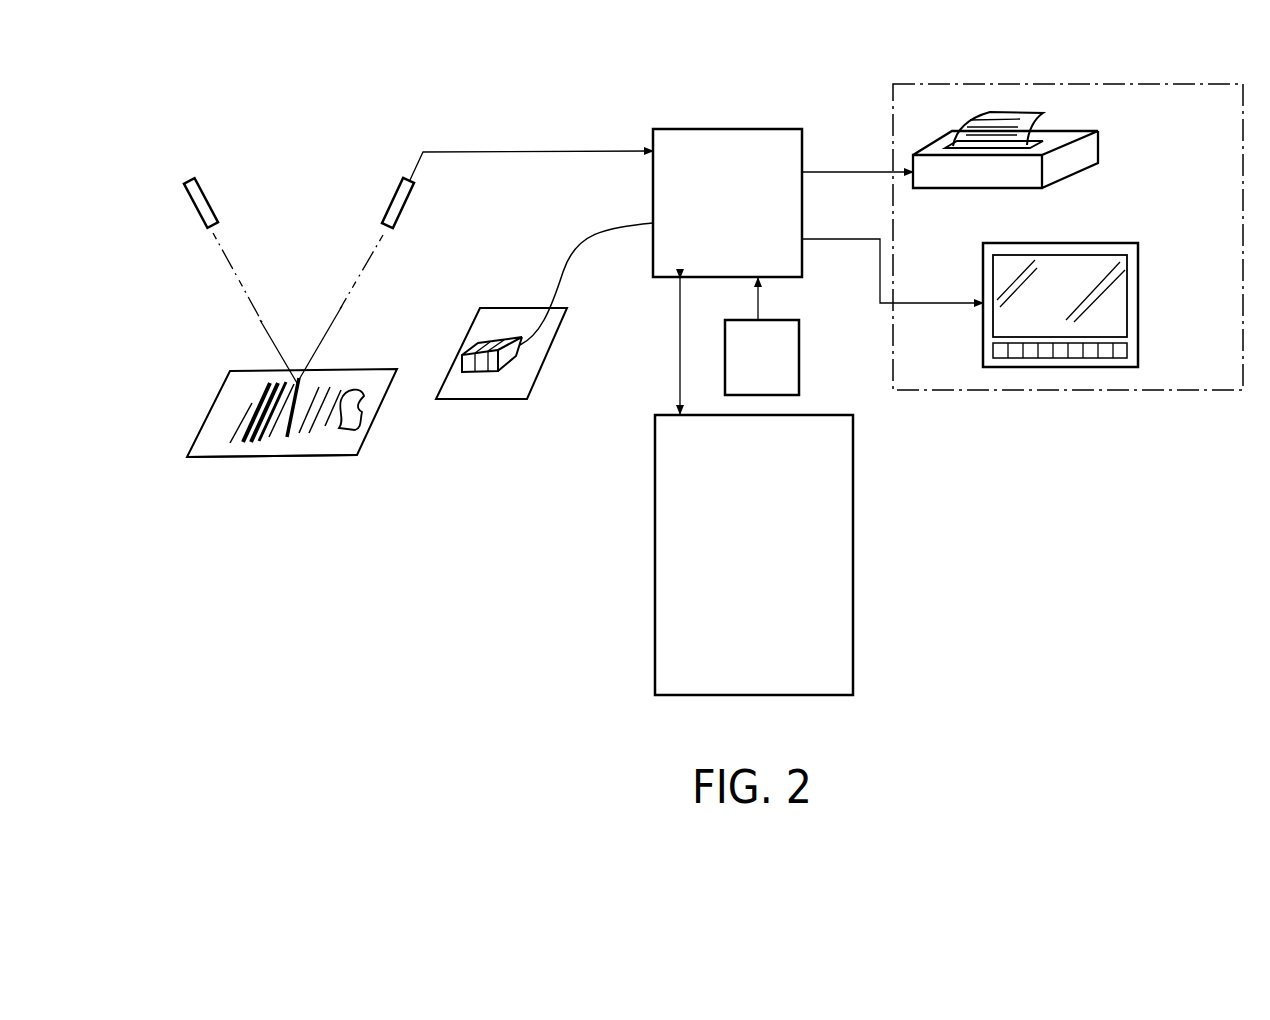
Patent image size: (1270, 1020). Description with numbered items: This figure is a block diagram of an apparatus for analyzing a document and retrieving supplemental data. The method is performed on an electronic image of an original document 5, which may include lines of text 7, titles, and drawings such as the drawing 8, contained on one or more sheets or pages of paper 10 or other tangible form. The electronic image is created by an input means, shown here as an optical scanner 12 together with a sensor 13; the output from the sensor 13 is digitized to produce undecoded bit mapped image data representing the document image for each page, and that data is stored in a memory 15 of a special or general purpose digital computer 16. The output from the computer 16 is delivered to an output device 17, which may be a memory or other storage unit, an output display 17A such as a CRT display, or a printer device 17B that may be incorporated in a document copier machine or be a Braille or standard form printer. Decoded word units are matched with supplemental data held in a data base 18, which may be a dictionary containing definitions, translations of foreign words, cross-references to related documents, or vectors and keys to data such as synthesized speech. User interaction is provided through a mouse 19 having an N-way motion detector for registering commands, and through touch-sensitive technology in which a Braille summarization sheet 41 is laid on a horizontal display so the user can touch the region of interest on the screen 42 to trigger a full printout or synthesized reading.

The original document 5 is at (228, 460).
The lines of text 7 is at (257, 435).
The figure 8 is at (363, 428).
The sheets or pages of paper 10 is at (240, 398).
The optical scanner 12 is at (207, 198).
The sensor 13 is at (393, 207).
The memory 15 is at (800, 369).
The digital computer 16 is at (653, 178).
The output device 17 is at (1101, 391).
The output display 17A is at (1065, 308).
The printer device 17B is at (1080, 160).
The data base 18 is at (853, 532).
The mouse 19 is at (530, 355).
The Braille summarization sheet 41 is at (1000, 352).
The screen 42 is at (1115, 278).